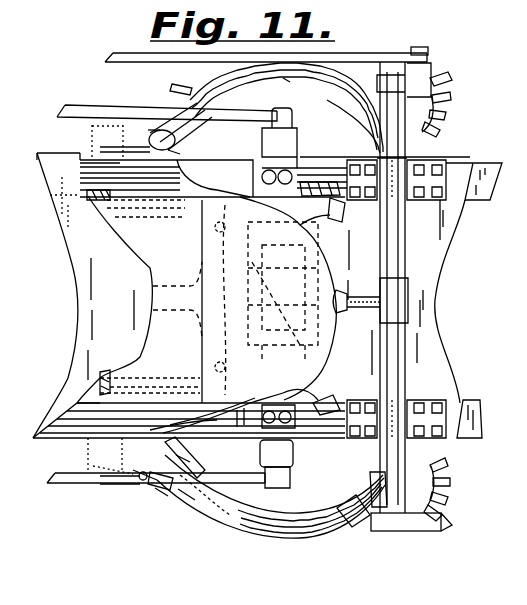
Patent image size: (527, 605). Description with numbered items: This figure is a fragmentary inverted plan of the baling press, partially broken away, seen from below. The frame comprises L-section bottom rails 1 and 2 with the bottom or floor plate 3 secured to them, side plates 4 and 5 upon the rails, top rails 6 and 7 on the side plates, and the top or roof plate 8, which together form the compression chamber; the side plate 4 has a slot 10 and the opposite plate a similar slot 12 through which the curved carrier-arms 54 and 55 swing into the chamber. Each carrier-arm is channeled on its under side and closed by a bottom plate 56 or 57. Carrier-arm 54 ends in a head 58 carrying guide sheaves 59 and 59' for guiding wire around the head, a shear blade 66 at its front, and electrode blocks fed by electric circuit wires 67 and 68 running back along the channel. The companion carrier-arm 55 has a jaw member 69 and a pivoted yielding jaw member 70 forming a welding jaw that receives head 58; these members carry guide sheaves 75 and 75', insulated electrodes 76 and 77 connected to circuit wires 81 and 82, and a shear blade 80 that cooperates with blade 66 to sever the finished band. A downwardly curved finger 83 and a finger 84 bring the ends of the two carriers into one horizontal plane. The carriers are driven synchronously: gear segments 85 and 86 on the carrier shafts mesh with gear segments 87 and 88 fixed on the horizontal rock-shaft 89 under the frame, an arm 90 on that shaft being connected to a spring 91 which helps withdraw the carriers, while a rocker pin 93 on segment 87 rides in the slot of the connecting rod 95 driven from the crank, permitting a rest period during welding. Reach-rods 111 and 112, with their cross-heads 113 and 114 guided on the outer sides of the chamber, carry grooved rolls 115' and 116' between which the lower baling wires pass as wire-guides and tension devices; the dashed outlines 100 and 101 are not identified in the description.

The bottom rail 1 is at (489, 184).
The bottom rail 2 is at (480, 413).
The bottom or floor plate 3 is at (76, 297).
The side plate 4 is at (103, 207).
The side plate 5 is at (97, 397).
The top rail 6 is at (83, 182).
The top rail 7 is at (72, 412).
The top or roof plate 8 is at (202, 244).
The slot 10 is at (133, 197).
The slot 12 is at (135, 397).
The carrier-arm 54 is at (222, 80).
The carrier-arm 55 is at (302, 534).
The bottom plate 56 is at (197, 103).
The bottom plate 57 is at (228, 512).
The head 58 is at (186, 145).
The grooved roller or guide sheave 59 is at (143, 127).
The grooved roller or guide sheave 59' is at (197, 146).
The shear blade 66 is at (123, 148).
The electric circuit wire 67 is at (172, 86).
The electric circuit wire 68 is at (285, 80).
The jaw member 69 is at (158, 487).
The yielding jaw member 70 is at (198, 456).
The grooved roller or guide sheave 75 is at (110, 491).
The grooved roller or guide sheave 75' is at (195, 448).
The electrical terminal block or electrode 76 is at (160, 489).
The electrical terminal block or electrode 77 is at (186, 494).
The shear blade 80 is at (173, 466).
The electrical circuit wire 81 is at (266, 534).
The electrical circuit wire 82 is at (316, 530).
The downwardly curved finger 83 is at (150, 140).
The finger 84 is at (143, 475).
The gear segment 85 is at (446, 117).
The gear segment 86 is at (449, 489).
The gear segment 87 is at (448, 80).
The gear segment 88 is at (453, 522).
The rock-shaft 89 is at (405, 258).
The arm 90 is at (363, 296).
The spring 91 is at (344, 312).
The rocker pin 93 is at (419, 47).
The connecting rod 95 is at (126, 53).
The dashed member 100 is at (289, 203).
The dashed member 101 is at (294, 407).
The reach-rod 111 is at (90, 105).
The reach-rod 112 is at (65, 483).
The cross-head 113 is at (282, 135).
The cross-head 114 is at (296, 470).
The grooved roll 115' is at (223, 296).
The grooved roll 116' is at (308, 306).